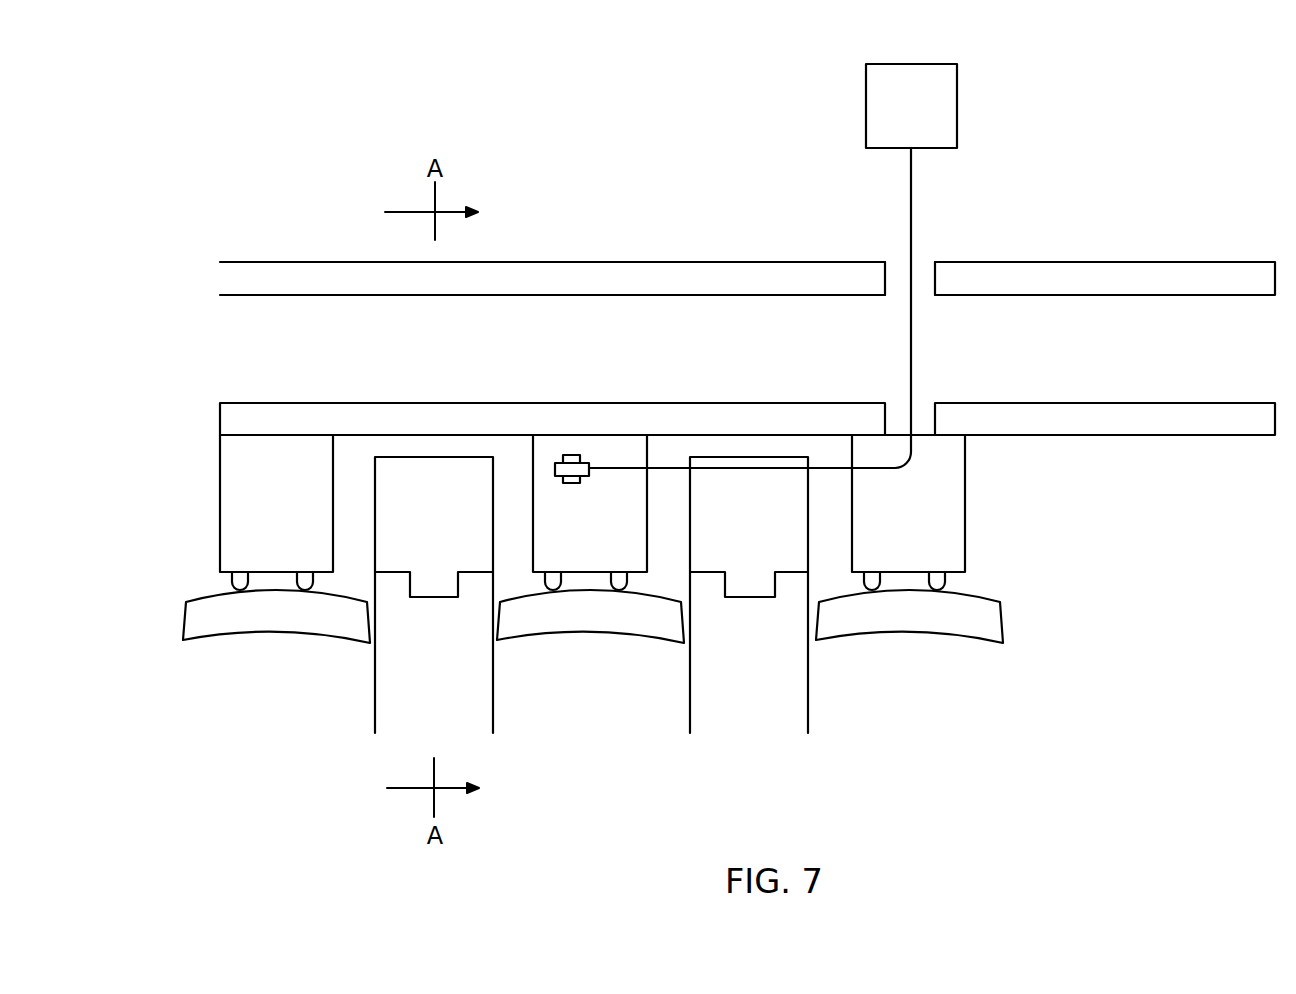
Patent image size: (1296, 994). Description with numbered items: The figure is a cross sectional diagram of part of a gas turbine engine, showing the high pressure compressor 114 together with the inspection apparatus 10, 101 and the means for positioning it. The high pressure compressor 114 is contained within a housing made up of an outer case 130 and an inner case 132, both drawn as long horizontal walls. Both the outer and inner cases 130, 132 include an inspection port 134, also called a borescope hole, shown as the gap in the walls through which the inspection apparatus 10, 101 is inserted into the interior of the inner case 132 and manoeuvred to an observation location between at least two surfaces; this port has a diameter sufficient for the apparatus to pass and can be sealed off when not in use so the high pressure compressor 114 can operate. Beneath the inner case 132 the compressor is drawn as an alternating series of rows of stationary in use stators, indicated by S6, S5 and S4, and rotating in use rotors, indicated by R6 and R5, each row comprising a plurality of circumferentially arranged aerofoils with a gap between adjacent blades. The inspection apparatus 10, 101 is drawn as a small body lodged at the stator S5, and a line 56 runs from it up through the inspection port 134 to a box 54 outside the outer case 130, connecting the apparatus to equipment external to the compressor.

The inspection apparatus 10 is at (531, 412).
The inspection apparatus 101 is at (555, 458).
The controller 54 is at (957, 100).
The signal line 56 is at (911, 335).
The high pressure compressor 114 is at (714, 584).
The outer case 130 is at (1212, 262).
The inner case 132 is at (1215, 403).
The inspection port 134 is at (921, 275).
The stator S6 is at (255, 531).
The rotor R6 is at (417, 531).
The stator S5 is at (570, 531).
The rotor R5 is at (728, 531).
The stator S4 is at (893, 531).